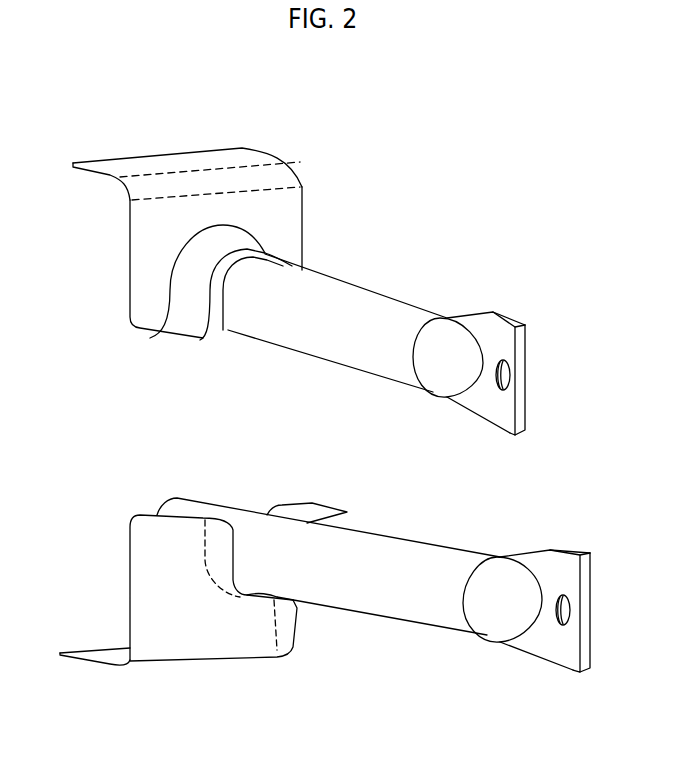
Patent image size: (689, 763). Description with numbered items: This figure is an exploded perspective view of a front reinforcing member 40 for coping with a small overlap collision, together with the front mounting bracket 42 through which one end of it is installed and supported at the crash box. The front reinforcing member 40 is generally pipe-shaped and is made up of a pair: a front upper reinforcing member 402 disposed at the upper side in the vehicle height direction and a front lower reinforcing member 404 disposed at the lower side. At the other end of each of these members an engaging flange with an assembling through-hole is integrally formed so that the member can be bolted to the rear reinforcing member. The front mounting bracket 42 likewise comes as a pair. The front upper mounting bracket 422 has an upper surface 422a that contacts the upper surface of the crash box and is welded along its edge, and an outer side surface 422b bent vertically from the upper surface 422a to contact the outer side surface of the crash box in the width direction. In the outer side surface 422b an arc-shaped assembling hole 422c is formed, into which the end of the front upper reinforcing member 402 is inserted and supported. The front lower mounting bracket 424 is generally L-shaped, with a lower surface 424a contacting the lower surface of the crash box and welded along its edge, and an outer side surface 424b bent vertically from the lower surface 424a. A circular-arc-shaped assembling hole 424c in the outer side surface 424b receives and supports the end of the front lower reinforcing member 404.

The front reinforcing member 40 is at (257, 417).
The front upper reinforcing member 402 is at (310, 347).
The front lower reinforcing member 404 is at (262, 528).
The front mounting bracket 42 is at (57, 395).
The front upper mounting bracket 422 is at (118, 307).
The upper surface 422a is at (174, 158).
The outer side surface 422b is at (301, 247).
The assembling hole 422c is at (265, 253).
The front lower mounting bracket 424 is at (120, 538).
The lower surface 424a is at (101, 668).
The outer side surface 424b is at (167, 648).
The assembling hole 424c is at (273, 662).